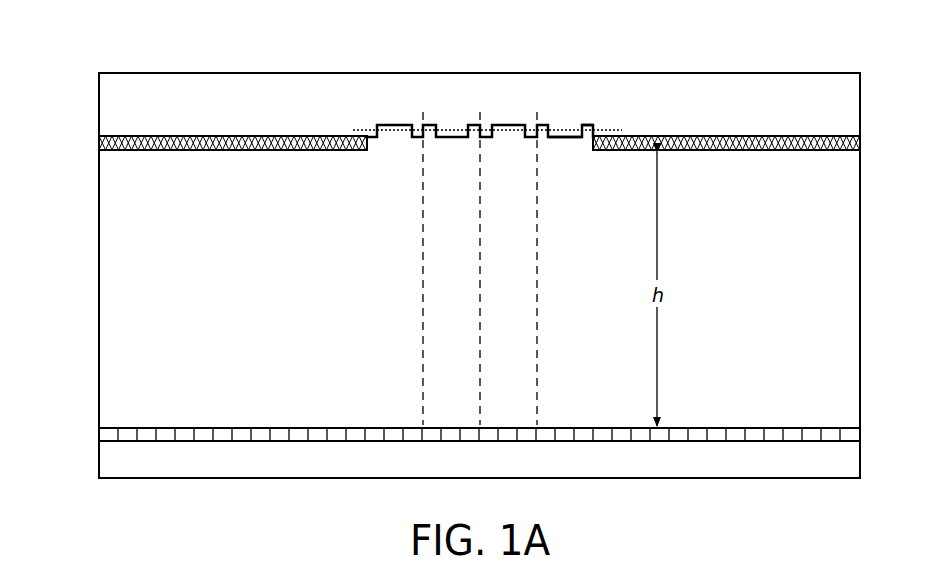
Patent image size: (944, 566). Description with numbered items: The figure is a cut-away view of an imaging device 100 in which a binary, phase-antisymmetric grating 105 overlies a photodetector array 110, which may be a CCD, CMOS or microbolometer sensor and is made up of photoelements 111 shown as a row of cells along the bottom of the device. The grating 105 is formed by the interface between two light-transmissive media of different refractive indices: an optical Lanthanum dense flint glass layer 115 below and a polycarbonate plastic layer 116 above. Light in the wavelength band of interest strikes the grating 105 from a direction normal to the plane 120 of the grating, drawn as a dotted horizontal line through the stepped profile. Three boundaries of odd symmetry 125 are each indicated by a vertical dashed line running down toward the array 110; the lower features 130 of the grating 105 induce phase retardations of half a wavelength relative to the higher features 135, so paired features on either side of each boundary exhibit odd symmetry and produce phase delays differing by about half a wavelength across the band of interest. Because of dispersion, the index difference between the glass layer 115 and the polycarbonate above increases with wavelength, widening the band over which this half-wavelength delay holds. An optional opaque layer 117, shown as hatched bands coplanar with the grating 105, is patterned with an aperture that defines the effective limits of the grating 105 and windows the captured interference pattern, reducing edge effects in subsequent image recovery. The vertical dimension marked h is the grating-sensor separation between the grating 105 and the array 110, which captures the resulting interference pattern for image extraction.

The imaging device 100 is at (126, 46).
The grating 105 is at (404, 164).
The photodetector array 110 is at (573, 475).
The photoelements 111 is at (240, 427).
The Lanthanum dense flint glass layer 115 is at (262, 286).
The polycarbonate plastic layer 116 is at (189, 106).
The opaque layer 117 is at (200, 151).
The plane of grating 120 is at (367, 132).
The boundaries of odd symmetry 125 is at (480, 249).
The lower features 130 is at (568, 139).
The higher features 135 is at (587, 124).